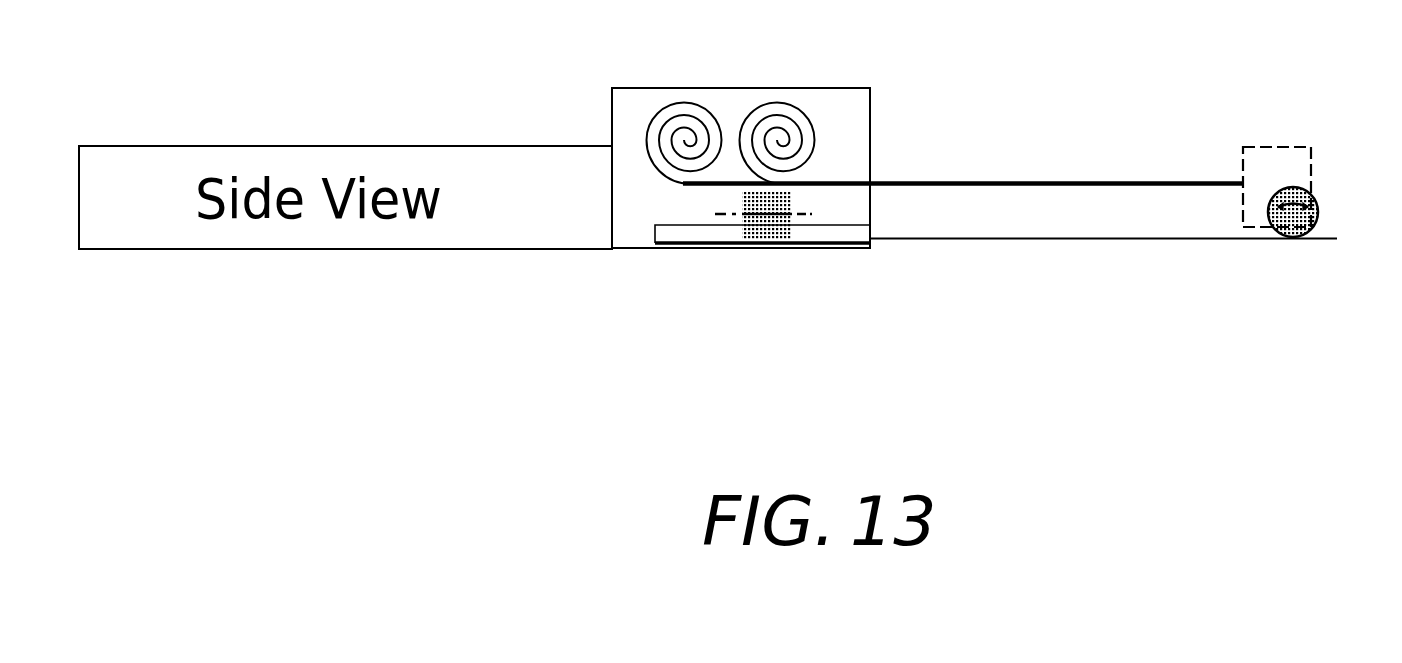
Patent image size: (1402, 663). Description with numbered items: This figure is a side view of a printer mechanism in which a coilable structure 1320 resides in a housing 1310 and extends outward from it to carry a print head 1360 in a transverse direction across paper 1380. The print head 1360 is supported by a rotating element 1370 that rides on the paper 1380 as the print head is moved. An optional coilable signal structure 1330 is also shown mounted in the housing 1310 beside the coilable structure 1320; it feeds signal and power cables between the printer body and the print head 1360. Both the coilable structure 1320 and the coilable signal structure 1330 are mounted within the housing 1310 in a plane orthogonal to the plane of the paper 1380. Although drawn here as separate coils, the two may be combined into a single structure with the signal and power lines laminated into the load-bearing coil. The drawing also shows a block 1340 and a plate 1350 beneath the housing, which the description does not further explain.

The housing 1310 is at (642, 88).
The coilable structure 1320 is at (642, 143).
The coilable signal structure 1330 is at (802, 107).
The block 1340 is at (772, 243).
The base plate 1350 is at (687, 228).
The print head 1360 is at (1273, 145).
The rotating element 1370 is at (1295, 240).
The paper 1380 is at (1028, 238).